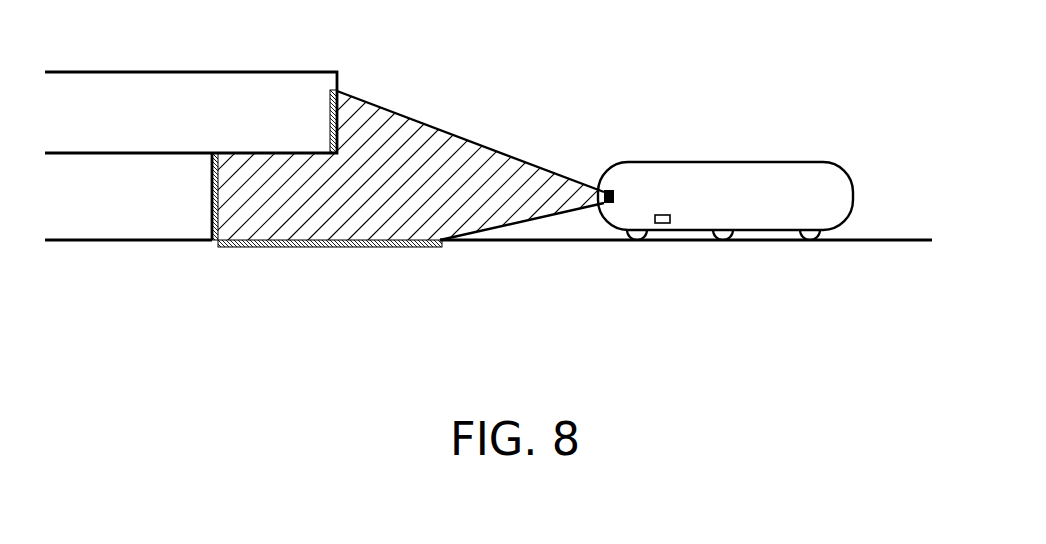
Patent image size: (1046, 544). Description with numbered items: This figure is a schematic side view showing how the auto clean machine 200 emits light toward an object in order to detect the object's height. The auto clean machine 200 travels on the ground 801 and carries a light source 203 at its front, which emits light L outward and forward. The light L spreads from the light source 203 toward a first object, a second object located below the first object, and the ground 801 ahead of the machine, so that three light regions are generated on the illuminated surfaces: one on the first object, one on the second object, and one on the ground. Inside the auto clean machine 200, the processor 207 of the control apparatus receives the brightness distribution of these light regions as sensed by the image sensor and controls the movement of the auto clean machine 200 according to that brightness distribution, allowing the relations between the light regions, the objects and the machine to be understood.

The light L is at (483, 170).
The auto clean machine 200 is at (835, 197).
The light source 203 is at (610, 188).
The processor 207 is at (665, 215).
The ground 801 is at (712, 300).